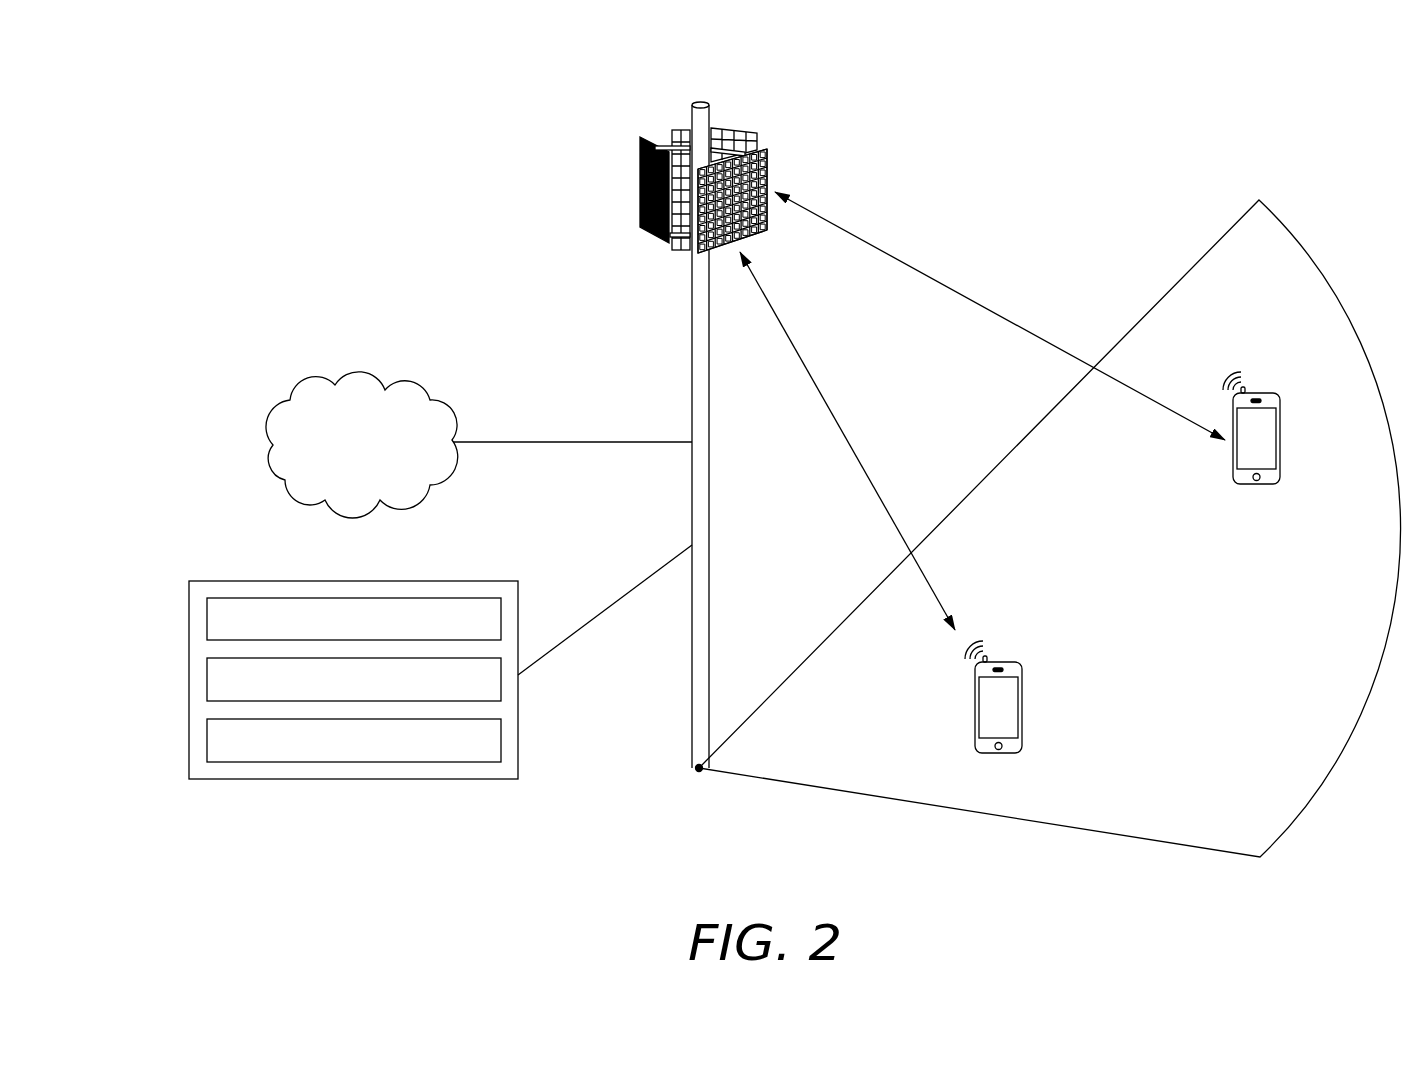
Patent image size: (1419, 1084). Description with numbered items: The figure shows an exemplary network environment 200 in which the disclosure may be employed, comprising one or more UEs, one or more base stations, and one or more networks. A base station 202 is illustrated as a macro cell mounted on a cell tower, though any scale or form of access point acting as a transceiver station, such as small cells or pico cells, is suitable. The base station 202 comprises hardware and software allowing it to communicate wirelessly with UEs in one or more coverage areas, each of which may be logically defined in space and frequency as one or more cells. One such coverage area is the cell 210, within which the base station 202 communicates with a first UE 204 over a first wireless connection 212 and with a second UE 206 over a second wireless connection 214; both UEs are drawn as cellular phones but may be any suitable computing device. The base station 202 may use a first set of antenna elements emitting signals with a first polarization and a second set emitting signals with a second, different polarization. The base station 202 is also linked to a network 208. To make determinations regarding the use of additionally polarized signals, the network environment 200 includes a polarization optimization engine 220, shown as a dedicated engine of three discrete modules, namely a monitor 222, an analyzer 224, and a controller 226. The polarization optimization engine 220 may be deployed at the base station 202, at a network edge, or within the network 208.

The network environment 200 is at (147, 131).
The base station 202 is at (718, 93).
The first UE 204 is at (1005, 651).
The second UE 206 is at (1264, 383).
The network 208 is at (398, 382).
The cell 210 is at (1246, 680).
The first wireless connection 212 is at (850, 440).
The second wireless connection 214 is at (967, 298).
The polarization optimization engine 220 is at (262, 581).
The monitor 222 is at (207, 620).
The analyzer 224 is at (207, 681).
The controller 226 is at (207, 741).